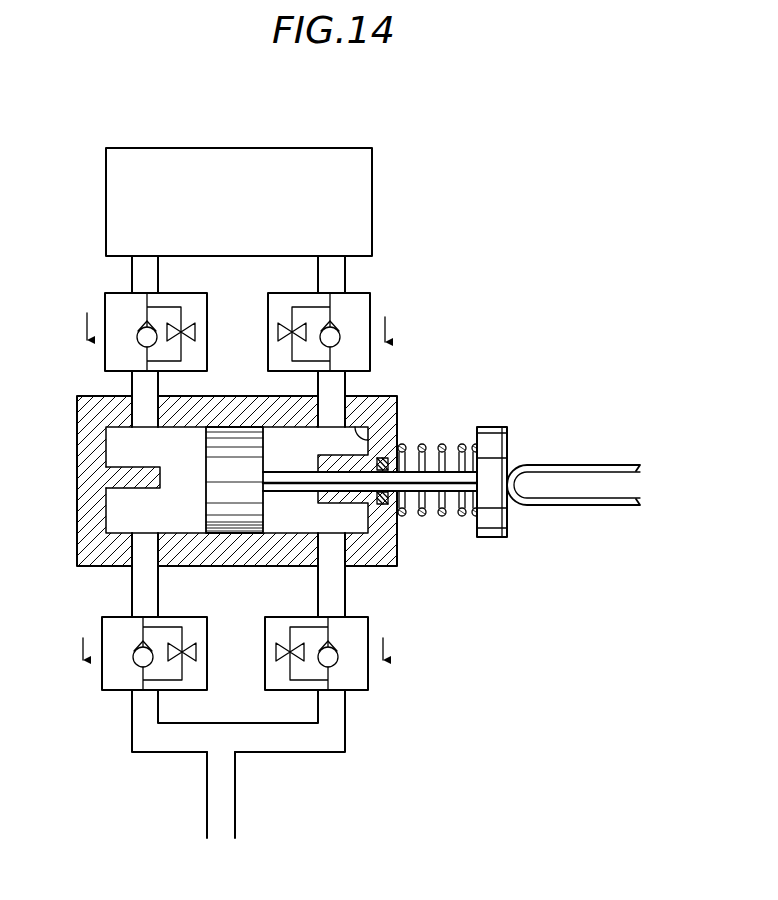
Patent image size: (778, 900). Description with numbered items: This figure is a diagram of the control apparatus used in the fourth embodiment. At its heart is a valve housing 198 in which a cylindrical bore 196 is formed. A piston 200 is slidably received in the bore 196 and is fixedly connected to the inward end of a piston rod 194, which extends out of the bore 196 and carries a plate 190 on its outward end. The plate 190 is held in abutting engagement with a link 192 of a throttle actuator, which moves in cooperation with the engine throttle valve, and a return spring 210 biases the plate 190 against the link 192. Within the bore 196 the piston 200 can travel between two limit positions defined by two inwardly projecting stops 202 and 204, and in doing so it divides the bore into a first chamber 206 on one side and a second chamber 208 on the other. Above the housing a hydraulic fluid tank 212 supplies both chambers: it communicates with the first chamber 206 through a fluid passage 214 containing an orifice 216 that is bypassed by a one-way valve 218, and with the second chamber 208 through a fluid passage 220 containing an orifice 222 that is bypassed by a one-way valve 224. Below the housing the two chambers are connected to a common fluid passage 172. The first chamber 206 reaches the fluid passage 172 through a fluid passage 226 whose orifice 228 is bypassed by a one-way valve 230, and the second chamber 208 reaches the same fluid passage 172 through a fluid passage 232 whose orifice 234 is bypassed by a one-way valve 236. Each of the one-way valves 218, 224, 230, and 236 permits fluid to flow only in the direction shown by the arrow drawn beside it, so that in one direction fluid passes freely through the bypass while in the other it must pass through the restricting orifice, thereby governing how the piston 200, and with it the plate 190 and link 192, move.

The fluid passage 172 is at (217, 780).
The plate 190 is at (492, 443).
The link 192 is at (565, 488).
The piston rod 194 is at (439, 495).
The cylindrical bore 196 is at (398, 415).
The valve housing 198 is at (378, 567).
The piston 200 is at (220, 455).
The inwardly projecting stop 202 is at (147, 480).
The inwardly projecting stop 204 is at (337, 462).
The first chamber 206 is at (190, 523).
The second chamber 208 is at (297, 523).
The return spring 210 is at (442, 444).
The hydraulic fluid tank 212 is at (255, 216).
The fluid passage 214 is at (138, 277).
The orifice 216 is at (188, 325).
The one-way valve 218 is at (140, 330).
The fluid passage 220 is at (333, 278).
The orifice 222 is at (273, 337).
The one-way valve 224 is at (337, 338).
The fluid passage 226 is at (137, 577).
The orifice 228 is at (207, 660).
The one-way valve 230 is at (137, 663).
The fluid passage 232 is at (333, 595).
The orifice 234 is at (275, 657).
The one-way valve 236 is at (340, 663).